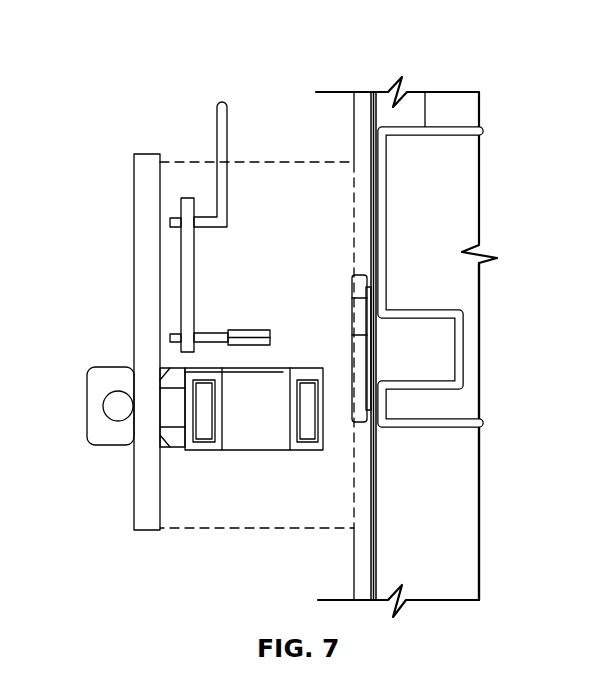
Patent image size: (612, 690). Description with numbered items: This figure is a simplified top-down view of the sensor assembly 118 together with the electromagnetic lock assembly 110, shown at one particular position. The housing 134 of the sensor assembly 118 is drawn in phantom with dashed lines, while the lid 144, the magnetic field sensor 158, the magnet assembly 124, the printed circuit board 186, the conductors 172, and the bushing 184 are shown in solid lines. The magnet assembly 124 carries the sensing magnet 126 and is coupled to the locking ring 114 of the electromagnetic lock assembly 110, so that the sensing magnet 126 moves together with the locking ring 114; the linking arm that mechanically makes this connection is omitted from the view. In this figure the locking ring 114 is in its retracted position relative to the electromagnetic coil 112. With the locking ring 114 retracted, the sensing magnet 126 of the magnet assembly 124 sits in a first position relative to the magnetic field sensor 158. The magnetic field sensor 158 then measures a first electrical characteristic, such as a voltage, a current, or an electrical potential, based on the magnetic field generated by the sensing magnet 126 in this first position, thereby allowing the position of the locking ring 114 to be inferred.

The electromagnetic lock assembly 110 is at (452, 74).
The electromagnetic coil 112 is at (414, 463).
The locking ring 114 is at (360, 128).
The sensor assembly 118 is at (119, 83).
The magnet assembly 124 is at (245, 450).
The sensing magnet 126 is at (205, 430).
The housing 134 is at (200, 160).
The lid 144 is at (147, 200).
The magnetic field sensor 158 is at (245, 334).
The conductors 172 is at (228, 130).
The bushing 184 is at (398, 353).
The printed circuit board 186 is at (188, 267).